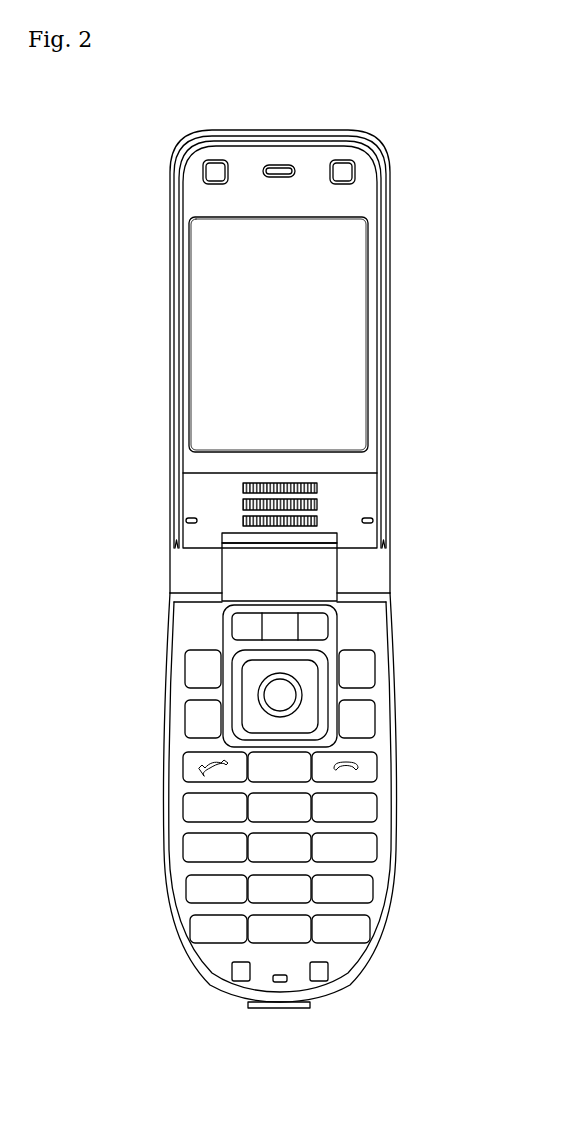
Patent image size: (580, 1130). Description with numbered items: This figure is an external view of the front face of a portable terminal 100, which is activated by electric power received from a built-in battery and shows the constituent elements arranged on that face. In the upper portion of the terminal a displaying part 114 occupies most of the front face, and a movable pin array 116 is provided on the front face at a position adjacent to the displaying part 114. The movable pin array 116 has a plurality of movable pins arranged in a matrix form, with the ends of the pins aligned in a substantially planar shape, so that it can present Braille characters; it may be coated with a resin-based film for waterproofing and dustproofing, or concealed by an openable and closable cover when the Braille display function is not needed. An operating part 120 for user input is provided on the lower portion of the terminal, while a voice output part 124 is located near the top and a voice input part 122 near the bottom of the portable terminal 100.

The portable terminal 100 is at (376, 113).
The displaying part 114 is at (379, 342).
The movable pin array 116 is at (318, 503).
The operating part 120 is at (418, 644).
The voice input part 122 is at (283, 983).
The voice output part 124 is at (282, 165).